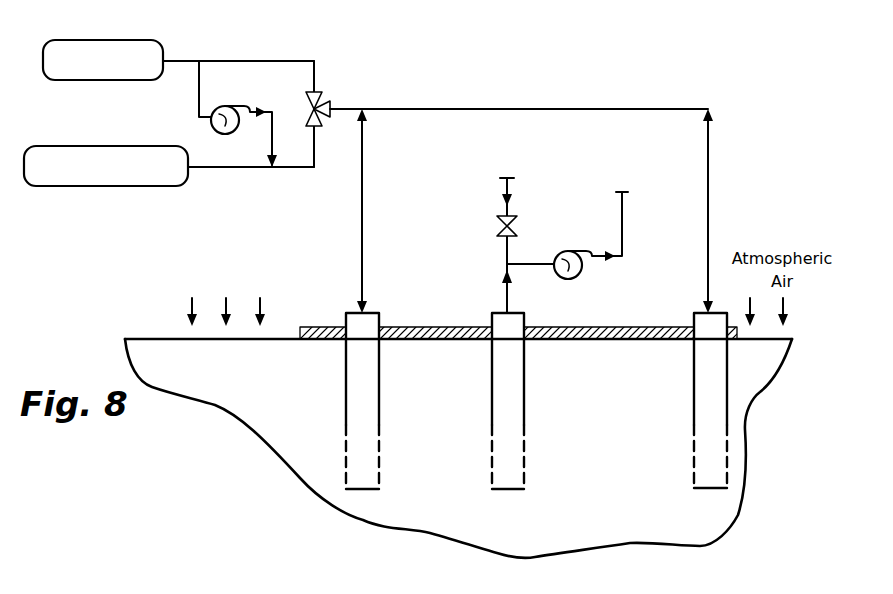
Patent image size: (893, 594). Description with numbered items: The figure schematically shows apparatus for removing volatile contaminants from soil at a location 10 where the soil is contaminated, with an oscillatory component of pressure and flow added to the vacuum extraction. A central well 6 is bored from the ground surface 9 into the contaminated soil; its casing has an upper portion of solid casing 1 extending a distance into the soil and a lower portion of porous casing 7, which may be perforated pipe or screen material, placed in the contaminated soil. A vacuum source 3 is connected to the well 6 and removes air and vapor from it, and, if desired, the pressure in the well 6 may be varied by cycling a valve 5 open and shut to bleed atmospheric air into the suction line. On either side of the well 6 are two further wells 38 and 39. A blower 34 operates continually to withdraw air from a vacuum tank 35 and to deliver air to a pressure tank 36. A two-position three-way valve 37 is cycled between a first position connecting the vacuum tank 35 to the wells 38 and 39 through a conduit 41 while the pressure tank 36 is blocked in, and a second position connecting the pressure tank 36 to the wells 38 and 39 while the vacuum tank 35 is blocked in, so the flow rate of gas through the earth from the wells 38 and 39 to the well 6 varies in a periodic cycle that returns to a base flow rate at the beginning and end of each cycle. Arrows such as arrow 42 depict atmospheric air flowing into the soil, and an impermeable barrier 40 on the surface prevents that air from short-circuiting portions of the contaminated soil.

The solid casing 1 is at (345, 386).
The vacuum source 3 is at (574, 251).
The valve 5 is at (497, 218).
The well 6 is at (523, 308).
The porous casing 7 is at (382, 462).
The ground surface 9 is at (152, 338).
The location 10 is at (458, 448).
The blower 34 is at (226, 106).
The vacuum tank 35 is at (106, 40).
The pressure tank 36 is at (104, 146).
The three-way valve 37 is at (318, 93).
The well 38 is at (378, 310).
The well 39 is at (692, 310).
The impermeable barrier 40 is at (566, 326).
The conduit 41 is at (350, 108).
The arrow 42 is at (268, 310).